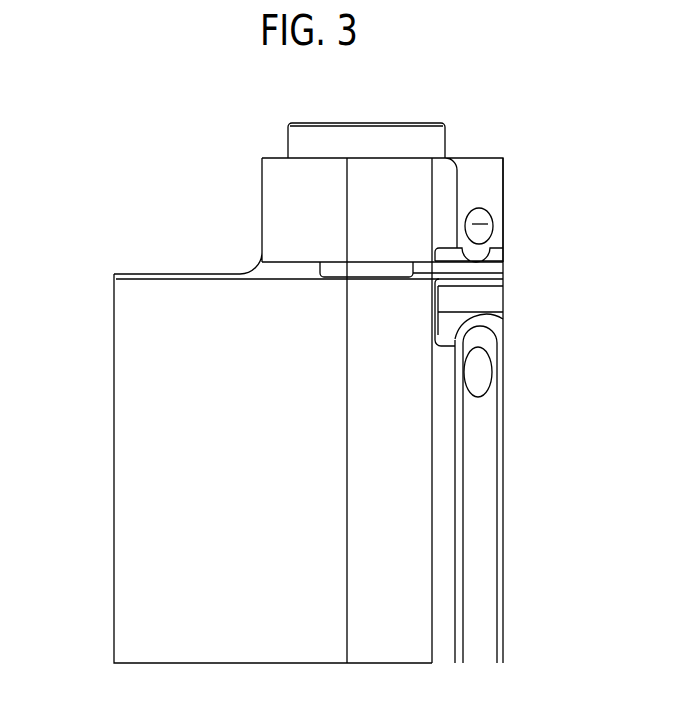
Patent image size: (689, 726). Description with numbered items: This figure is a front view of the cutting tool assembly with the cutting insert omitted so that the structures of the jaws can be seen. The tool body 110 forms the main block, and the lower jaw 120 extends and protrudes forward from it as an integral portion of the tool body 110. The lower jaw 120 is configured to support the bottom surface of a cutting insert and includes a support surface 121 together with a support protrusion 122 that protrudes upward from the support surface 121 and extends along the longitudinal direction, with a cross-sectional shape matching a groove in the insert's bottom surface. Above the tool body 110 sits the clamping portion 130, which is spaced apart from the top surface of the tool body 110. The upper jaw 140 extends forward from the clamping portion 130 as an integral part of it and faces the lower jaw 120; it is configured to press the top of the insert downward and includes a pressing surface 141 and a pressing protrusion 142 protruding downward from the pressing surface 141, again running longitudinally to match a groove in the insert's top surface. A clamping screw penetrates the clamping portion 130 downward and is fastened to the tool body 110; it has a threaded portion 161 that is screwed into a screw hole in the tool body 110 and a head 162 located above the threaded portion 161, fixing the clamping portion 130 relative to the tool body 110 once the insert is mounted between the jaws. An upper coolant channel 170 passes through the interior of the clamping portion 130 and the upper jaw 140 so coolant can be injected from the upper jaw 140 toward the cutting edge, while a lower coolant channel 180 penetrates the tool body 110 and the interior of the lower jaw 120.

The tool body 110 is at (132, 401).
The lower jaw 120 is at (487, 414).
The support surface 121 is at (472, 313).
The support protrusion 122 is at (490, 334).
The clamping portion 130 is at (268, 175).
The upper jaw 140 is at (497, 228).
The pressing surface 141 is at (500, 250).
The pressing protrusion 142 is at (480, 261).
The threaded portion 161 is at (337, 270).
The head 162 is at (405, 143).
The upper coolant channel 170 is at (480, 224).
The lower coolant channel 180 is at (481, 376).